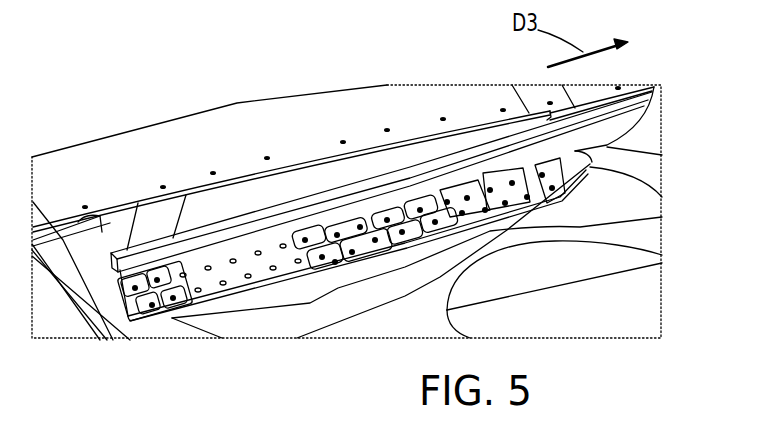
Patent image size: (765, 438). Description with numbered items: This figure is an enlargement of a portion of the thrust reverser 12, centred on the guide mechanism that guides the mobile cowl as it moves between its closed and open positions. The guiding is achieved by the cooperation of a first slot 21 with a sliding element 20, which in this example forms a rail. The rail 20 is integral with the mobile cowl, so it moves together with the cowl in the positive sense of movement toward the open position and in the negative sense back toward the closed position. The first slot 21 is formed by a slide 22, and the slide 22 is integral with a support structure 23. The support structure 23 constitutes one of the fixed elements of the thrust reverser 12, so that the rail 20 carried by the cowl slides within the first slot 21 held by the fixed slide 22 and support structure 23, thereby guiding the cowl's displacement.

The thrust reverser 12 is at (99, 56).
The sliding element 20 is at (230, 278).
The first slot 21 is at (115, 273).
The slide 22 is at (253, 214).
The support structure 23 is at (305, 178).